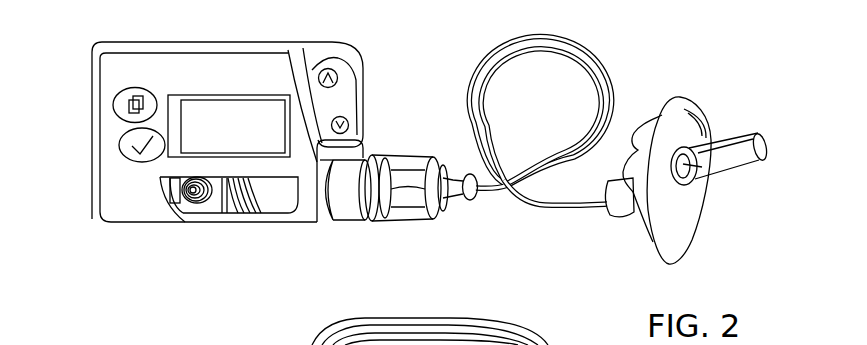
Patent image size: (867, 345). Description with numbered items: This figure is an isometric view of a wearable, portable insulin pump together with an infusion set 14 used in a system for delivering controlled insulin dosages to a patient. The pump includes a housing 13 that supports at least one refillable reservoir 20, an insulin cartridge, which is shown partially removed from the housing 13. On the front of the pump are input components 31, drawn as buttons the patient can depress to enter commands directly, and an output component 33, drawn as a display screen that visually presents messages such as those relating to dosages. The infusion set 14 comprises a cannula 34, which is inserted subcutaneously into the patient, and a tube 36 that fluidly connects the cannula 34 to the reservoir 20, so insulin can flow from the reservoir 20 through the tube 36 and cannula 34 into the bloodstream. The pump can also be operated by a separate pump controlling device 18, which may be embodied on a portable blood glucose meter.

The housing 13 is at (91, 197).
The infusion set 14 is at (688, 78).
The pump controlling device 18 is at (260, 343).
The refillable reservoir 20 is at (342, 198).
The input components 31 is at (127, 140).
The output component 33 is at (245, 113).
The cannula 34 is at (685, 167).
The tube 36 is at (513, 50).